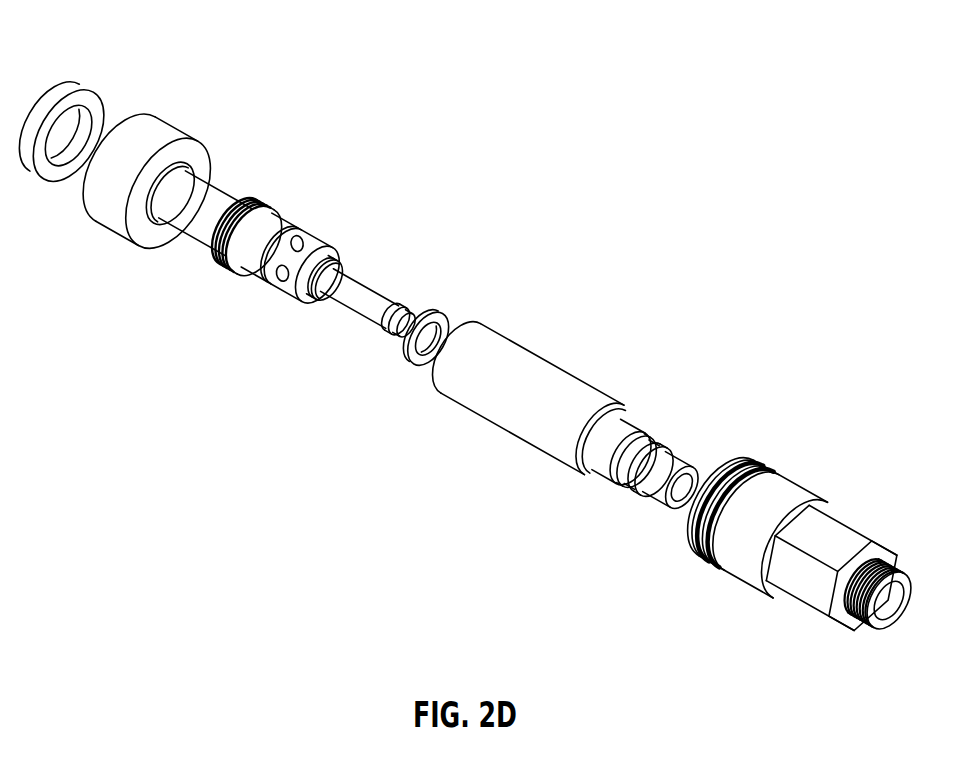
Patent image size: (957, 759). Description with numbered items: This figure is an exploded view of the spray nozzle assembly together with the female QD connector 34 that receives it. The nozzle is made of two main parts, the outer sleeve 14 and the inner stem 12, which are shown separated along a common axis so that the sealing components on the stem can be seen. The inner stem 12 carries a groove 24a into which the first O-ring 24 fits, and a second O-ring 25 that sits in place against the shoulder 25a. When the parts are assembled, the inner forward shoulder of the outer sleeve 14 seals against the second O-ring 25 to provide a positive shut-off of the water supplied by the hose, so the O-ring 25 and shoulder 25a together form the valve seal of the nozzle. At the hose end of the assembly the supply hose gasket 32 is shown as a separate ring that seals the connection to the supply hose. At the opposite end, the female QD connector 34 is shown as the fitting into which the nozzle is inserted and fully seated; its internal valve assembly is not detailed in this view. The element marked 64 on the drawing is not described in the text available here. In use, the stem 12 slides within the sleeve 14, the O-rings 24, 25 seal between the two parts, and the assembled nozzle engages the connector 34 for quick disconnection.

The inner stem 12 is at (291, 203).
The outer sleeve 14 is at (533, 403).
The first O-ring 24 is at (436, 318).
The groove 24a is at (287, 238).
The second O-ring 25 is at (330, 270).
The shoulder 25a is at (292, 287).
The supply hose gasket 32 is at (72, 96).
The female QD connector 34 is at (768, 542).
The stepped outlet 64 is at (625, 428).